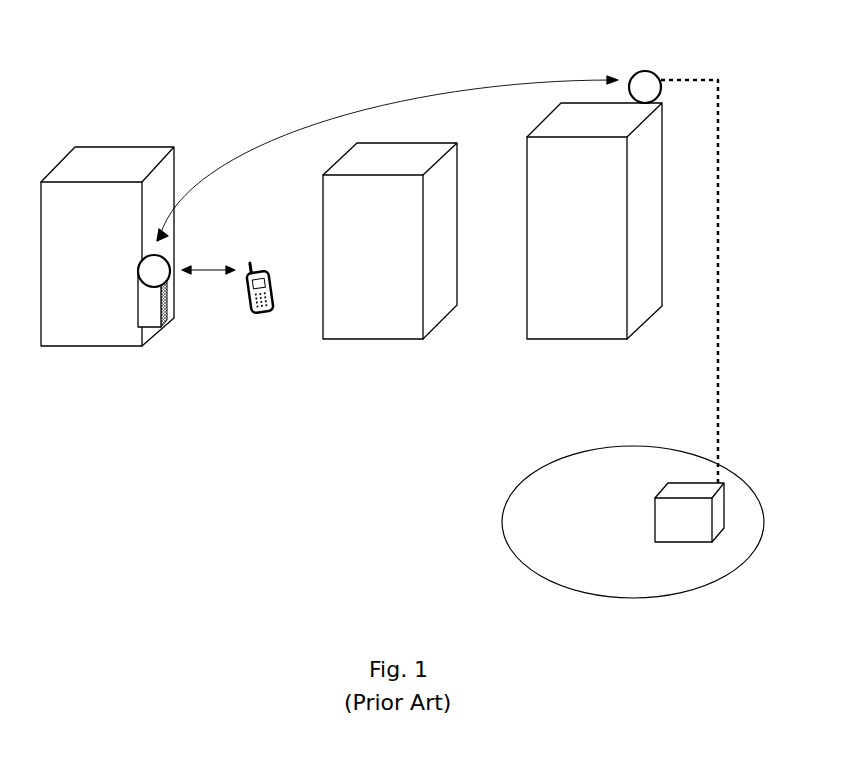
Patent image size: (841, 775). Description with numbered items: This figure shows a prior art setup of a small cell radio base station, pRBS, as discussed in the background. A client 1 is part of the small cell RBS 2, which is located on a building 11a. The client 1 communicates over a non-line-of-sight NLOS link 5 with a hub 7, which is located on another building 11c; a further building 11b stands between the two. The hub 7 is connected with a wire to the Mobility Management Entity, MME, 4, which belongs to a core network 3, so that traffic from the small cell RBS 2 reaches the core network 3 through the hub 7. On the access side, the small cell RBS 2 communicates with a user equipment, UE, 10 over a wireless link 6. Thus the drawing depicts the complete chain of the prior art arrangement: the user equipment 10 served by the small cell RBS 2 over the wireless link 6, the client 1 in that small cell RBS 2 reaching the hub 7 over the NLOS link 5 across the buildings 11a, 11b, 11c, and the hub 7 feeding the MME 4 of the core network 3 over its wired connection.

The client 1 is at (139, 270).
The small cell RBS 2 is at (152, 328).
The core network 3 is at (500, 523).
The Mobility Management Entity 4 is at (655, 520).
The NLOS link 5 is at (313, 66).
The wireless link 6 is at (231, 244).
The hub 7 is at (645, 71).
The user equipment 10 is at (270, 312).
The building 11a is at (92, 346).
The building 11b is at (370, 339).
The building 11c is at (566, 339).